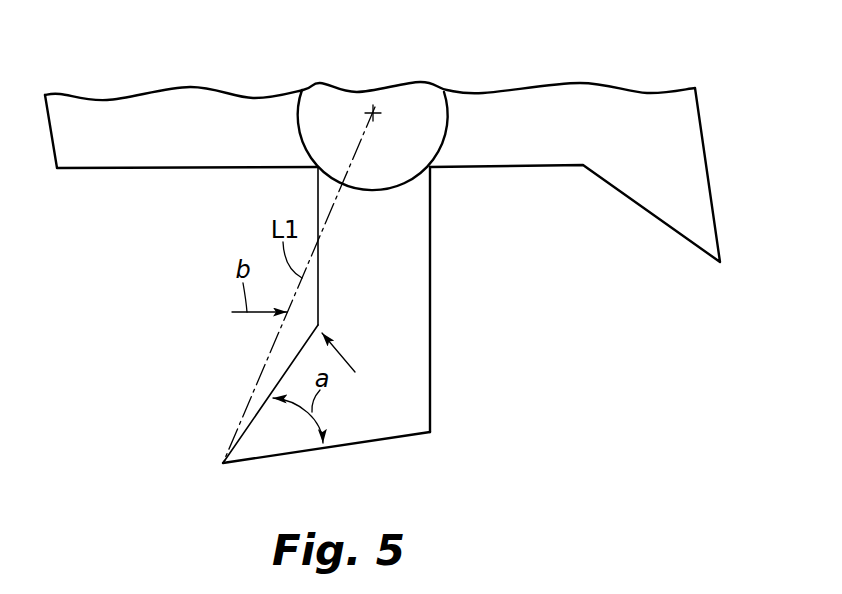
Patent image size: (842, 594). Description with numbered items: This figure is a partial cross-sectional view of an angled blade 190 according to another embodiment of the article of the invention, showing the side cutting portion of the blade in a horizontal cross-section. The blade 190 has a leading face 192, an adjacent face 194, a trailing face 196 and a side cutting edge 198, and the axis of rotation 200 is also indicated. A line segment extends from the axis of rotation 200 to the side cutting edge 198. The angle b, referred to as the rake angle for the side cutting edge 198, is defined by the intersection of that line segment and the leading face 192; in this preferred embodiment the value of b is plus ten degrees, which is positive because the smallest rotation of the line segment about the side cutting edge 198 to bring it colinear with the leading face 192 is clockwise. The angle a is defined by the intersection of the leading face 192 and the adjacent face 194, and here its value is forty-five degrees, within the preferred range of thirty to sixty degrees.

The angled blade 190 is at (514, 32).
The leading face 192 is at (293, 361).
The adjacent face 194 is at (383, 440).
The trailing face 196 is at (431, 390).
The side cutting edge 198 is at (223, 465).
The axis of rotation 200 is at (374, 111).